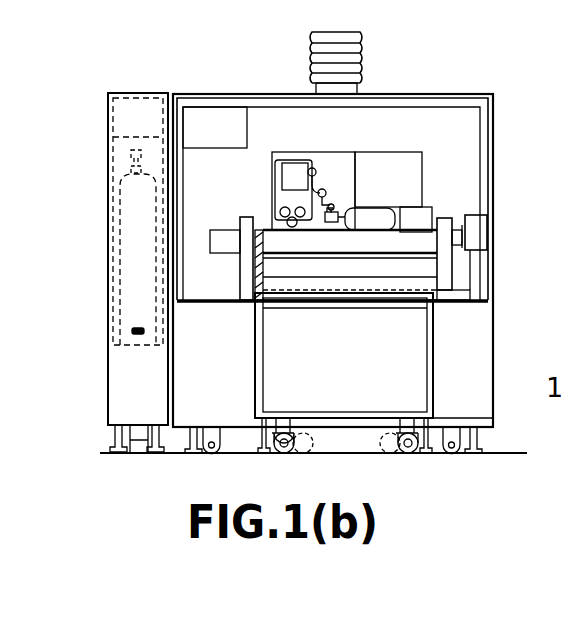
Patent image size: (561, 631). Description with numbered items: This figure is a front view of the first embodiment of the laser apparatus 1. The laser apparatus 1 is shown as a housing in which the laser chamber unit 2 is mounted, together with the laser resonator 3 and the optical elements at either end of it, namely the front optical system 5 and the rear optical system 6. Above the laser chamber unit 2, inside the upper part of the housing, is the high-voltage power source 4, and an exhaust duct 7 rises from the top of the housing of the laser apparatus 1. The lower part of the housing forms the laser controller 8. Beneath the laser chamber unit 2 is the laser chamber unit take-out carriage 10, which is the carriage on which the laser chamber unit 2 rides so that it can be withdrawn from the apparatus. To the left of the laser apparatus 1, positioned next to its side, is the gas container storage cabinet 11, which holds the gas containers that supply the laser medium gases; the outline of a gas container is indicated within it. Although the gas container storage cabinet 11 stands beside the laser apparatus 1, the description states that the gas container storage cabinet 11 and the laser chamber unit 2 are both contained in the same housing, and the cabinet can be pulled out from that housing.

The laser apparatus 1 is at (448, 97).
The laser chamber unit 2 is at (413, 220).
The laser resonator 3 is at (247, 287).
The high-voltage power source 4 is at (208, 122).
The front optical system 5 is at (475, 232).
The rear optical system 6 is at (222, 247).
The exhaust duct 7 is at (360, 45).
The laser controller 8 is at (470, 390).
The laser chamber unit take-out carriage 10 is at (432, 344).
The gas container storage cabinet 11 is at (112, 170).